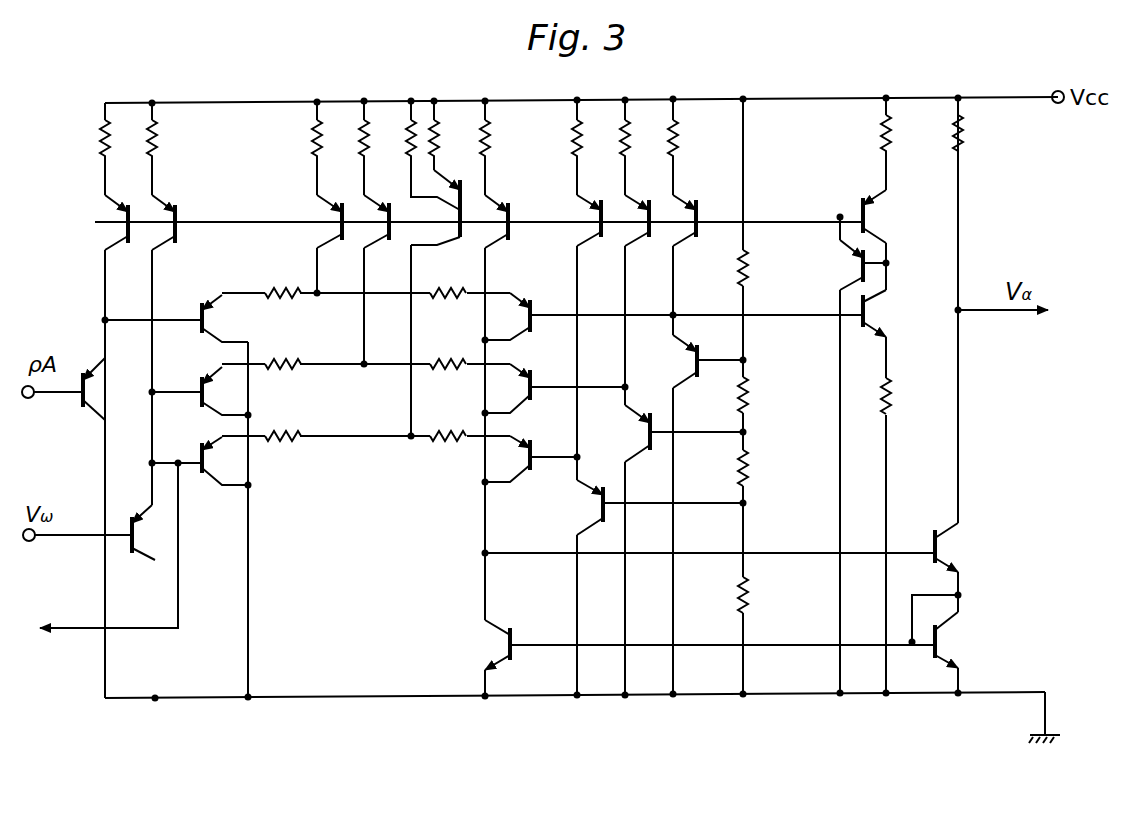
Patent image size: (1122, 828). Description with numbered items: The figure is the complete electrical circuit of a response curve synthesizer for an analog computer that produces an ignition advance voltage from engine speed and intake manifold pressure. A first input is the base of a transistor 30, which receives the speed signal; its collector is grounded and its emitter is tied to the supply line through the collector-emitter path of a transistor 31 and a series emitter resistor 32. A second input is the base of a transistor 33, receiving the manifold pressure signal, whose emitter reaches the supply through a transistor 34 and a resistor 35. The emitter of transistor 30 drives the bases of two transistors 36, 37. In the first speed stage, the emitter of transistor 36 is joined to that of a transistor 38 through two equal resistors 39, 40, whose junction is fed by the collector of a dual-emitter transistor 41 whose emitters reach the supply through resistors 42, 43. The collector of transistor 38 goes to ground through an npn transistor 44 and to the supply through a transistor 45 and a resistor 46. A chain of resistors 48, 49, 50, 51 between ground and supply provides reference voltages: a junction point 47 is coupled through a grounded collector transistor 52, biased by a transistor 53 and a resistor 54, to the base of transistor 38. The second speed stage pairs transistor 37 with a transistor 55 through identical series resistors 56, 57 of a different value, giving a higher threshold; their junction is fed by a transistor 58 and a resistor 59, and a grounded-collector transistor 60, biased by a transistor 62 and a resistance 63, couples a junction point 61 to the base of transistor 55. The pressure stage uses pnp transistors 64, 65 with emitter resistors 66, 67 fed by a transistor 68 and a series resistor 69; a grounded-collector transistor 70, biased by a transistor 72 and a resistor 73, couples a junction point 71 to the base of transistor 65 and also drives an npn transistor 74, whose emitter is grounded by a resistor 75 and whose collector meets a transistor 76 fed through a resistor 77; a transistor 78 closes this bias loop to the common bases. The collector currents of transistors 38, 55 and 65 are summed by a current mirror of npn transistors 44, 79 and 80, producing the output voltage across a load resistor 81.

The transistor 30 is at (132, 553).
The transistor 31 is at (176, 222).
The series emitter resistor 32 is at (154, 141).
The transistor 33 is at (68, 378).
The transistor 34 is at (93, 222).
The resistor 35 is at (102, 142).
The transistor 36 is at (203, 476).
The transistor 37 is at (204, 380).
The transistor 38 is at (534, 452).
The resistor 39 is at (278, 438).
The resistor 40 is at (443, 438).
The dual-emitter transistor 41 is at (460, 237).
The resistor 42 is at (408, 143).
The resistor 43 is at (436, 142).
The npn transistor 44 is at (490, 659).
The transistor 45 is at (510, 215).
The resistor 46 is at (488, 142).
The junction point 47 is at (746, 503).
The resistor 48 is at (748, 596).
The resistor 49 is at (746, 474).
The resistor 50 is at (746, 394).
The resistor 51 is at (746, 278).
The grounded collector transistor 52 is at (605, 491).
The transistor 53 is at (602, 206).
The resistor 54 is at (574, 143).
The transistor 55 is at (534, 380).
The resistor 56 is at (284, 364).
The resistor 57 is at (443, 366).
The transistor 58 is at (390, 208).
The resistor 59 is at (362, 143).
The grounded-collector transistor 60 is at (653, 421).
The junction point 61 is at (746, 432).
The transistor 62 is at (649, 206).
The resistance 63 is at (622, 143).
The pnp transistor 64 is at (198, 304).
The pnp transistor 65 is at (550, 293).
The resistor 66 is at (282, 291).
The resistor 67 is at (438, 294).
The transistor 68 is at (342, 208).
The series resistor 69 is at (315, 143).
The grounded-collector transistor 70 is at (700, 355).
The junction point 71 is at (745, 360).
The transistor 72 is at (698, 210).
The resistor 73 is at (676, 142).
The npn transistor 74 is at (873, 324).
The resistor 75 is at (892, 400).
The transistor 76 is at (867, 217).
The resistor 77 is at (882, 138).
The transistor 78 is at (860, 263).
The npn transistor 79 is at (930, 537).
The npn transistor 80 is at (954, 650).
The load resistor 81 is at (960, 138).